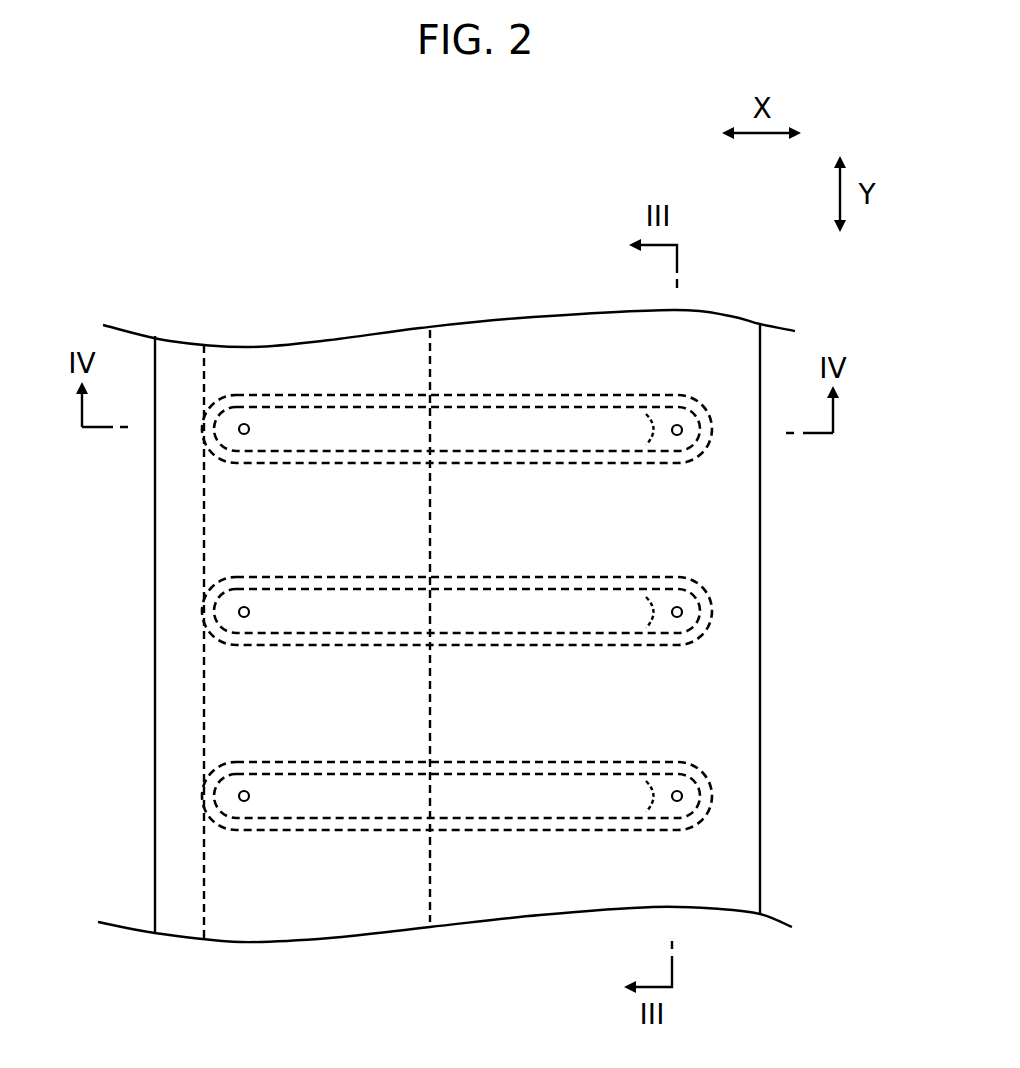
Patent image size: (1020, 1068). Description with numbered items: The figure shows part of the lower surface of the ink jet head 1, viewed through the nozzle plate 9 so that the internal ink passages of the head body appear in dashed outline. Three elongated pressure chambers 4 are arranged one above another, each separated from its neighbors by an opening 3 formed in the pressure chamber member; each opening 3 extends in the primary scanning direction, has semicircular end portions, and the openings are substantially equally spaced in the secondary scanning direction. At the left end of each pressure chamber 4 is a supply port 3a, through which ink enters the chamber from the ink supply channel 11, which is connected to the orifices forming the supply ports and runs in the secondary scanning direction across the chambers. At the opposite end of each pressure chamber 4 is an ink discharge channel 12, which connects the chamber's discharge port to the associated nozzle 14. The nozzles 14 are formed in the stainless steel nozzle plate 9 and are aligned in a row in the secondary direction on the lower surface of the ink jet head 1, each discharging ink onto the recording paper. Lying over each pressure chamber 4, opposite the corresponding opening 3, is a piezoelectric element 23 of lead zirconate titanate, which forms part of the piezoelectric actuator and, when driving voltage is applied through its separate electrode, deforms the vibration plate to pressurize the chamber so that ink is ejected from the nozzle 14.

The ink jet head 1 is at (176, 199).
The opening 3 is at (404, 460).
The supply port 3a is at (245, 435).
The pressure chamber 4 is at (525, 397).
The nozzle plate 9 is at (165, 843).
The ink supply channel 11 is at (430, 358).
The ink discharge channel 12 is at (645, 446).
The nozzle 14 is at (677, 436).
The piezoelectric element 23 is at (330, 405).